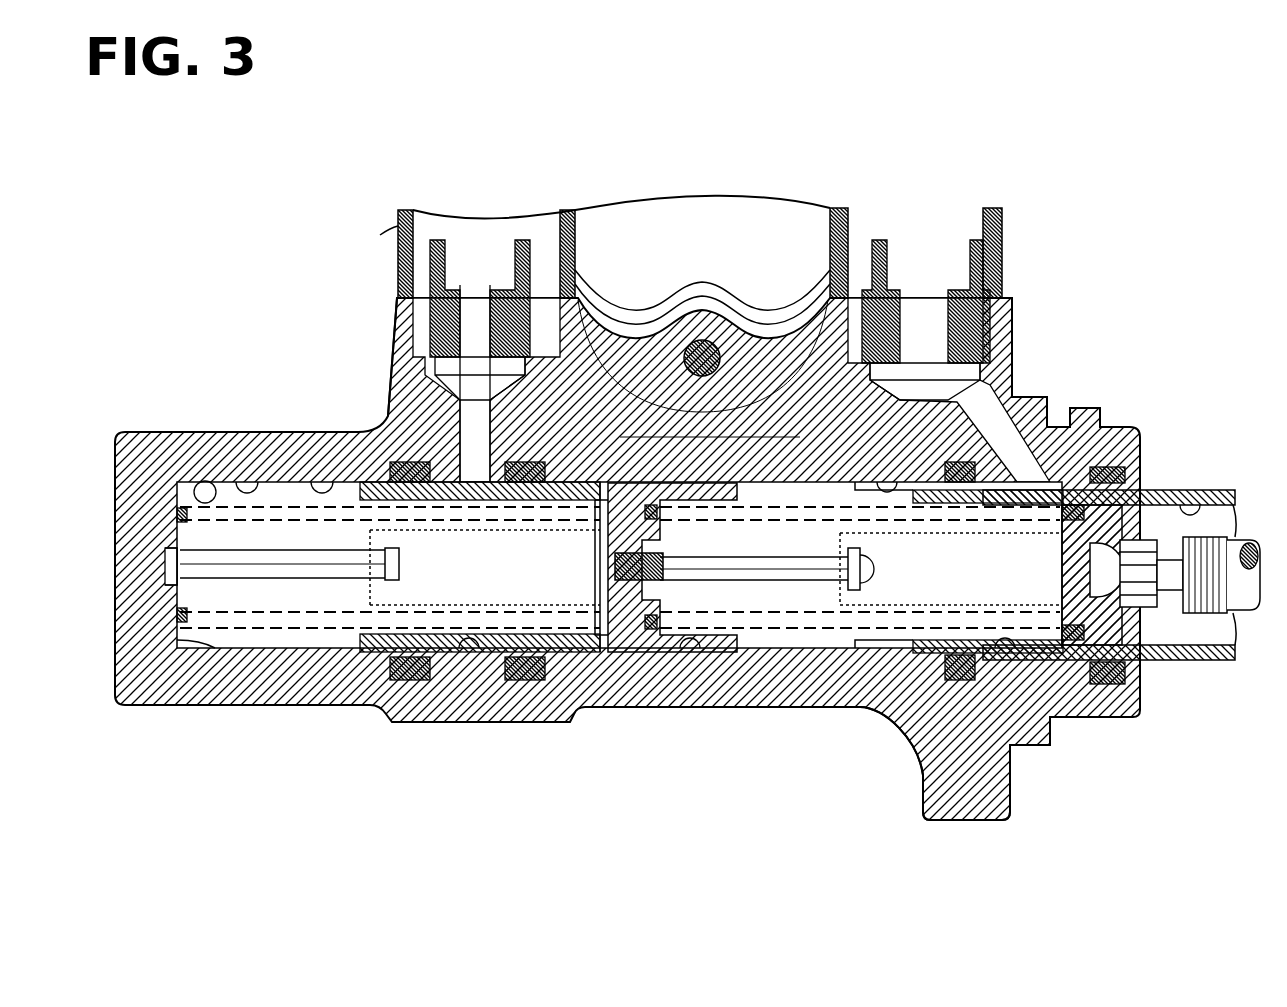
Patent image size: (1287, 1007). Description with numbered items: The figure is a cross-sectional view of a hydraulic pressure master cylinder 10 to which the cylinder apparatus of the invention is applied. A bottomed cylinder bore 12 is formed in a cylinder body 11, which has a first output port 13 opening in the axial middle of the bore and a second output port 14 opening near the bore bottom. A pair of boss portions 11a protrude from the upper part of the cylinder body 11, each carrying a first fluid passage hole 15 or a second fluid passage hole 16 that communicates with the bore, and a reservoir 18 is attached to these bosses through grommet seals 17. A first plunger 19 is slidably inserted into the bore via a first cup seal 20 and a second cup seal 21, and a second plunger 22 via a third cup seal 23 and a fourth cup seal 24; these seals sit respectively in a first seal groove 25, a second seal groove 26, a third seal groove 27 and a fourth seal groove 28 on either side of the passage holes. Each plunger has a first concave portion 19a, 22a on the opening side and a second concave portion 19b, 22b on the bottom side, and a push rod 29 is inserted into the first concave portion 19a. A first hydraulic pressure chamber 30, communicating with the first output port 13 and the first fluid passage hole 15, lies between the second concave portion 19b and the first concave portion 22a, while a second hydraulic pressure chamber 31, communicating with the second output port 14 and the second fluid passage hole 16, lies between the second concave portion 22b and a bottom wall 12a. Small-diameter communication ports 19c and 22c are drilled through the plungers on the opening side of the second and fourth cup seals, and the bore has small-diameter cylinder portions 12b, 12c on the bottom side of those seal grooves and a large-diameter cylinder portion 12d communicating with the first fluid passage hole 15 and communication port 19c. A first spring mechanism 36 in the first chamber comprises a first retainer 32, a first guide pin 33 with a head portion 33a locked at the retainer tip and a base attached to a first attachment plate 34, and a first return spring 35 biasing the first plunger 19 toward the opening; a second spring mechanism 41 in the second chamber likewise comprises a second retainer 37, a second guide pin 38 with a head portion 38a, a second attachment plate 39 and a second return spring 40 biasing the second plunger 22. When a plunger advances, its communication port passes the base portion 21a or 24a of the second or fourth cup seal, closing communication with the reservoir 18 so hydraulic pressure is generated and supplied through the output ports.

The hydraulic pressure master cylinder 10 is at (664, 134).
The cylinder body 11 is at (298, 704).
The boss portion 11a is at (398, 348).
The cylinder bore 12 is at (247, 480).
The bottom wall 12a is at (190, 660).
The small-diameter cylinder portion 12b is at (890, 482).
The small-diameter cylinder portion 12c is at (326, 480).
The large-diameter cylinder portion 12d is at (1030, 455).
The first output port 13 is at (638, 480).
The second output port 14 is at (212, 484).
The first fluid passage hole 15 is at (1018, 402).
The second fluid passage hole 16 is at (492, 422).
The grommet seal 17 is at (402, 316).
The reservoir 18 is at (398, 240).
The first plunger 19 is at (1163, 492).
The first concave portion 19a is at (1205, 495).
The second concave portion 19b is at (1003, 652).
The communication port 19c is at (985, 505).
The first cup seal 20 is at (1118, 690).
The second cup seal 21 is at (955, 682).
The base portion 21a is at (976, 680).
The second plunger 22 is at (625, 655).
The first concave portion 22a is at (692, 640).
The second concave portion 22b is at (470, 640).
The communication port 22c is at (447, 502).
The third cup seal 23 is at (525, 668).
The fourth cup seal 24 is at (405, 668).
The base portion 24a is at (428, 670).
The first seal groove 25 is at (1115, 445).
The second seal groove 26 is at (952, 468).
The third seal groove 27 is at (546, 502).
The fourth seal groove 28 is at (366, 470).
The push rod 29 is at (1222, 610).
The first hydraulic pressure chamber 30 is at (820, 655).
The second hydraulic pressure chamber 31 is at (240, 650).
The first retainer 32 is at (900, 640).
The first guide pin 33 is at (765, 560).
The head portion 33a is at (868, 565).
The first attachment plate 34 is at (655, 548).
The first return spring 35 is at (770, 625).
The first spring mechanism 36 is at (840, 630).
The second retainer 37 is at (560, 640).
The second guide pin 38 is at (270, 555).
The head portion 38a is at (400, 574).
The second attachment plate 39 is at (185, 545).
The second return spring 40 is at (342, 632).
The second spring mechanism 41 is at (284, 630).